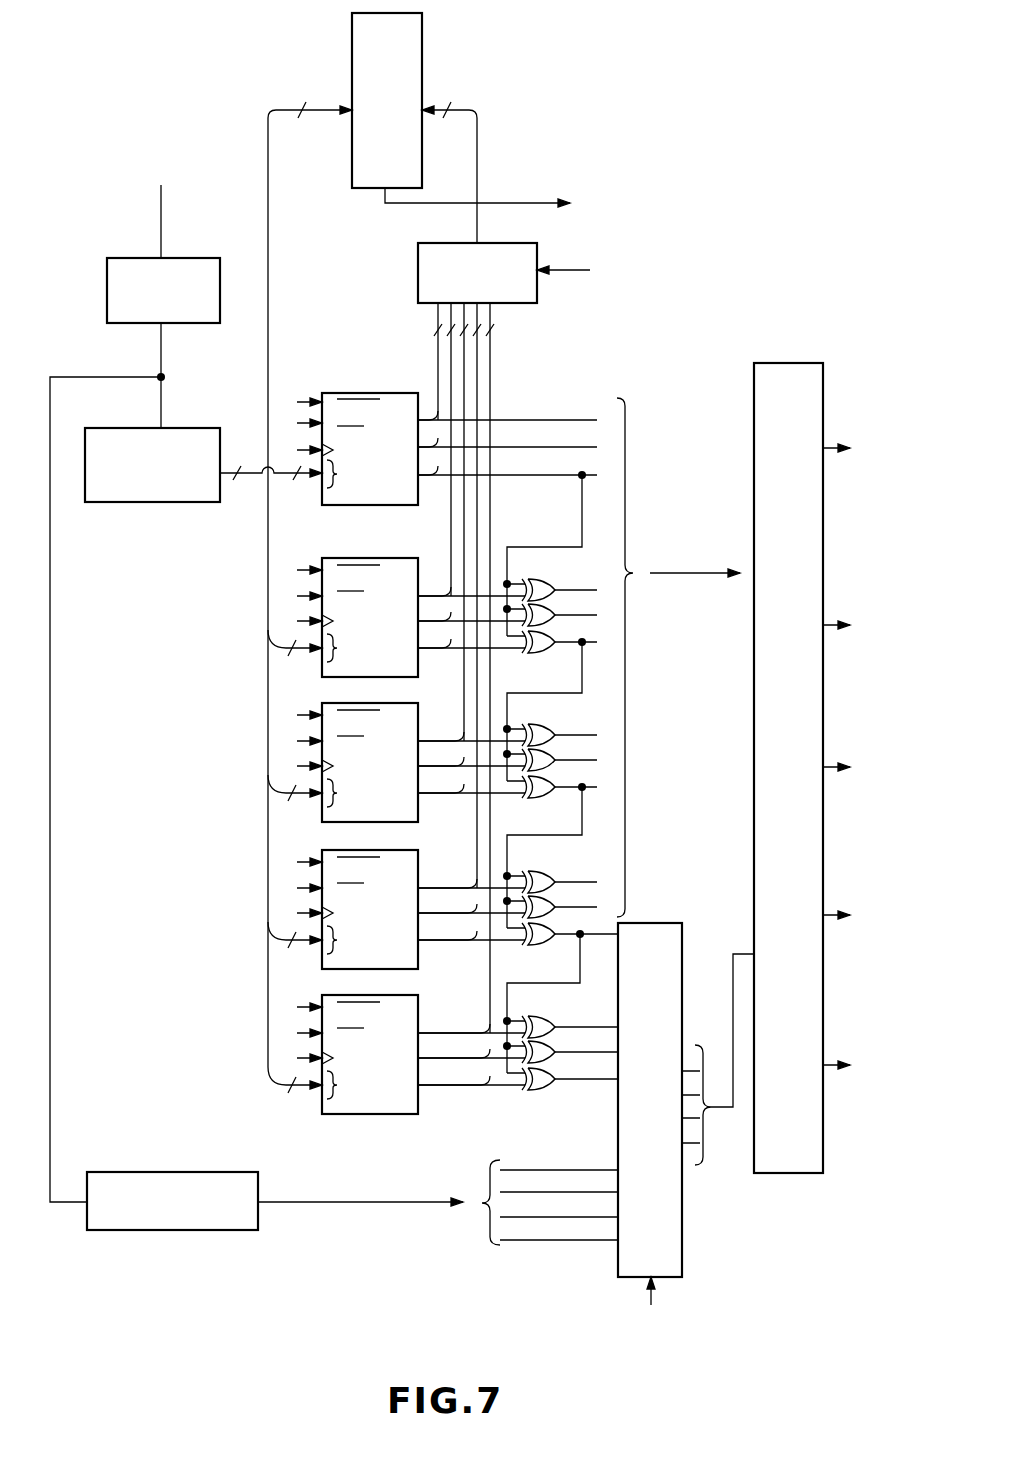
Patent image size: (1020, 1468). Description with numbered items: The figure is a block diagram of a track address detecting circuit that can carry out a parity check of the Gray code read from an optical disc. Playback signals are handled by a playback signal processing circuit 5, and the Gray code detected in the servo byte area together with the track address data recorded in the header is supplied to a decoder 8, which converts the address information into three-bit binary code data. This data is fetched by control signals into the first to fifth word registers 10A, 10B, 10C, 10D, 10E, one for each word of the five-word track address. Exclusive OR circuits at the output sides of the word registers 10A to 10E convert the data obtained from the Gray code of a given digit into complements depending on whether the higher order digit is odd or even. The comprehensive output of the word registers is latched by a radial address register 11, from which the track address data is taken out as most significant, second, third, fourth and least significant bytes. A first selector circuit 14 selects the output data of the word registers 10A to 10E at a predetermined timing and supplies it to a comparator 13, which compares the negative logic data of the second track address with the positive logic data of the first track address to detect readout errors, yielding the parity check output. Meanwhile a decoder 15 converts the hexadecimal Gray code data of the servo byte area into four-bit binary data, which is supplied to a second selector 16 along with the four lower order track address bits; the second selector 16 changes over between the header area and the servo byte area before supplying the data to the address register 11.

The playback signal processing circuit 5 is at (220, 275).
The decoder 8 is at (213, 428).
The first word register 10A is at (355, 393).
The second word register 10B is at (393, 558).
The third word register 10C is at (418, 718).
The fourth word register 10D is at (418, 865).
The fifth word register 10E is at (418, 1010).
The radial address register 11 is at (789, 363).
The comparator 13 is at (422, 80).
The first selector circuit 14 is at (537, 255).
The decoder 15 is at (105, 1172).
The second selector 16 is at (682, 1262).